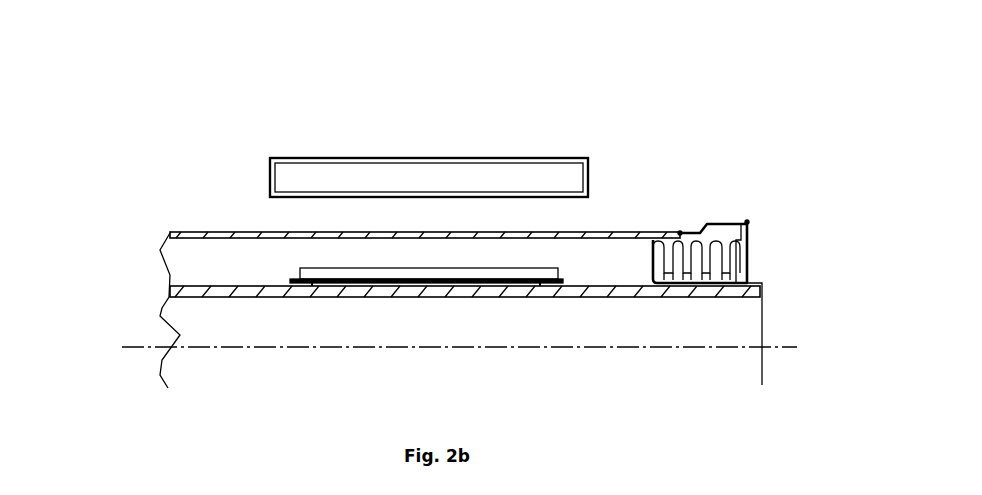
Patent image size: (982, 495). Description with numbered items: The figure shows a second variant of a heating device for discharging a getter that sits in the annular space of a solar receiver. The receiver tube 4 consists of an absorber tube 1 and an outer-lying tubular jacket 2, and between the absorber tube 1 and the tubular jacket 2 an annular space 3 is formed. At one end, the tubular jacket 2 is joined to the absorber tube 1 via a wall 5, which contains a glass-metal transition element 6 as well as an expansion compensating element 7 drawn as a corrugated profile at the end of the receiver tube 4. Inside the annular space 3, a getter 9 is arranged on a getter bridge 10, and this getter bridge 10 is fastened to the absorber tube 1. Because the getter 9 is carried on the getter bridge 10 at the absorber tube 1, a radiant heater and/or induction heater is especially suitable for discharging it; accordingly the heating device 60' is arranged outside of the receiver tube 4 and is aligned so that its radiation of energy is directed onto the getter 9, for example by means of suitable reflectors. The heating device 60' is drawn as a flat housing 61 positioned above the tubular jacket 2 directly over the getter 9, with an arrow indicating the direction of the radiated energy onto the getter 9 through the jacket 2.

The absorber tube 1 is at (177, 292).
The tubular jacket 2 is at (172, 233).
The annular space 3 is at (185, 267).
The receiver tube 4 is at (135, 337).
The wall 5 is at (757, 276).
The glass-metal transition element 6 is at (703, 230).
The expansion compensating element 7 is at (717, 260).
The getter 9 is at (300, 268).
The getter bridge 10 is at (293, 280).
The heating device 60' is at (429, 129).
The heater housing 61 is at (483, 160).